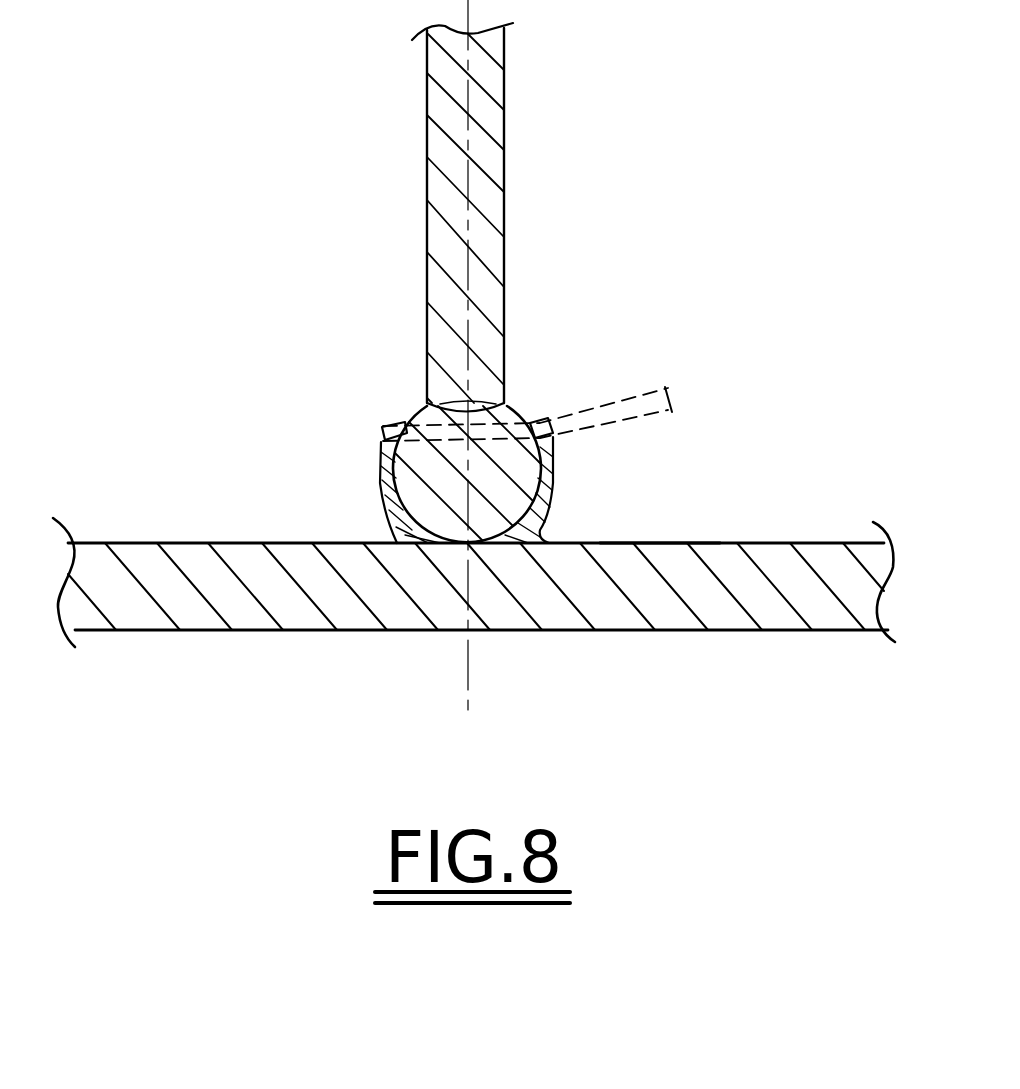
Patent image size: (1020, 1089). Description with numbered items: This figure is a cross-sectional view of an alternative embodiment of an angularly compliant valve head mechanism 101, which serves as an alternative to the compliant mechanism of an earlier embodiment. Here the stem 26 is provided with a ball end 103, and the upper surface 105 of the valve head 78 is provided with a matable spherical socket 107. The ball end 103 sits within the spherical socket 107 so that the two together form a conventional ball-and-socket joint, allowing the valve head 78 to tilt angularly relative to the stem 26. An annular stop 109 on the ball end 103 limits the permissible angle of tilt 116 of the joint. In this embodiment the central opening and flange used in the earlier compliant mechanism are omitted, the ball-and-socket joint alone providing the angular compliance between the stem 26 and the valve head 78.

The stem 26 is at (488, 123).
The angularly compliant valve head mechanism 101 is at (725, 253).
The ball end 103 is at (512, 410).
The upper surface 105 is at (657, 543).
The matable spherical socket 107 is at (553, 492).
The annular stop 109 is at (547, 423).
The permissible angle of tilt 116 is at (670, 398).
The valve head 78 is at (727, 572).